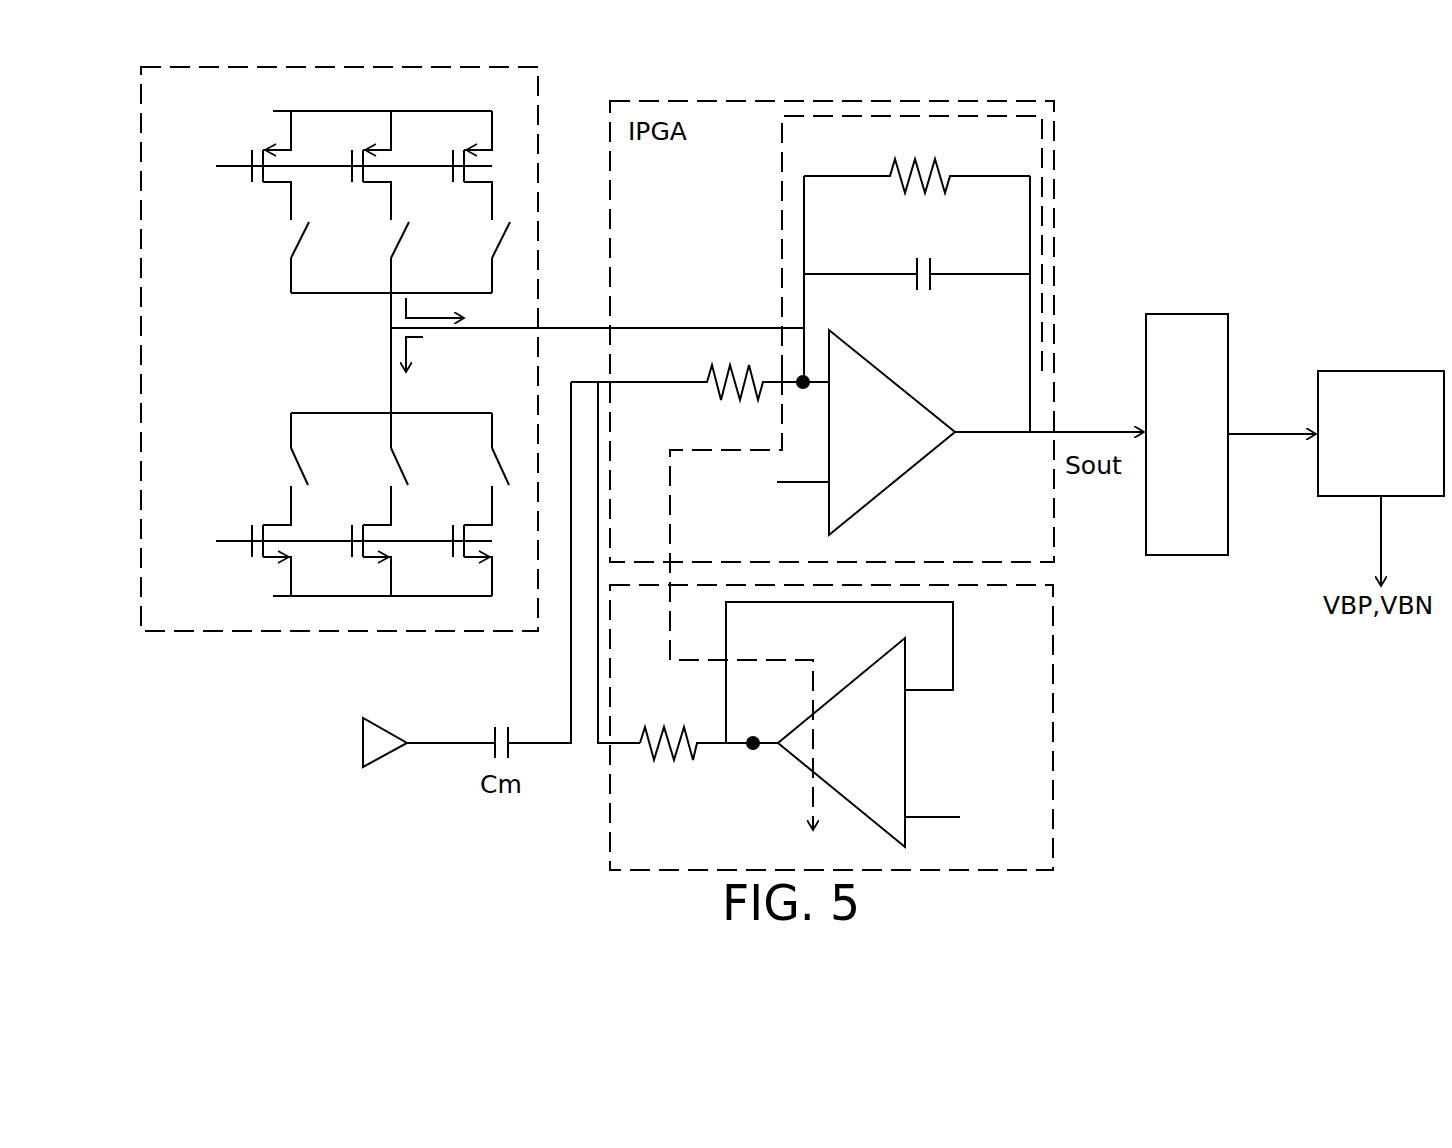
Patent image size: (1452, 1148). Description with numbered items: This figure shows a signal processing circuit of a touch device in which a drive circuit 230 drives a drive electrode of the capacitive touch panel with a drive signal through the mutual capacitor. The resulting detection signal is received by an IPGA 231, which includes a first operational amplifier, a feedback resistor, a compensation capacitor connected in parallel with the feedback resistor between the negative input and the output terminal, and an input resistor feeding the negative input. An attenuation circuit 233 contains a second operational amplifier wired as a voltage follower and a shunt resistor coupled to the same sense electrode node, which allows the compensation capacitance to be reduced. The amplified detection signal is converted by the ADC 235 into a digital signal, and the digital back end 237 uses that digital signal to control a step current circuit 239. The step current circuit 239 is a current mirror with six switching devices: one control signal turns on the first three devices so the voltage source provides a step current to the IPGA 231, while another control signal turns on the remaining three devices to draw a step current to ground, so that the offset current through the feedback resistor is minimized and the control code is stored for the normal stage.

The drive circuit 230 is at (363, 742).
The IPGA 231 is at (1054, 145).
The attenuation circuit 233 is at (1053, 740).
The ADC 235 is at (1199, 314).
The digital back end 237 is at (1375, 371).
The step current circuit 239 is at (195, 631).